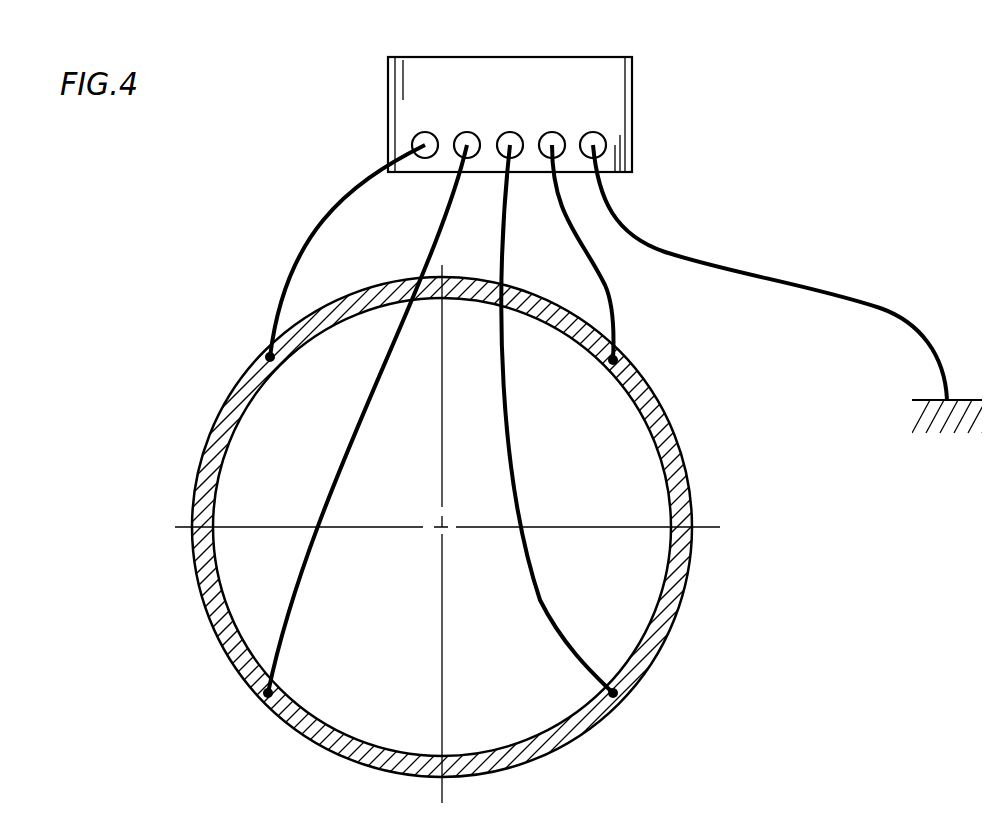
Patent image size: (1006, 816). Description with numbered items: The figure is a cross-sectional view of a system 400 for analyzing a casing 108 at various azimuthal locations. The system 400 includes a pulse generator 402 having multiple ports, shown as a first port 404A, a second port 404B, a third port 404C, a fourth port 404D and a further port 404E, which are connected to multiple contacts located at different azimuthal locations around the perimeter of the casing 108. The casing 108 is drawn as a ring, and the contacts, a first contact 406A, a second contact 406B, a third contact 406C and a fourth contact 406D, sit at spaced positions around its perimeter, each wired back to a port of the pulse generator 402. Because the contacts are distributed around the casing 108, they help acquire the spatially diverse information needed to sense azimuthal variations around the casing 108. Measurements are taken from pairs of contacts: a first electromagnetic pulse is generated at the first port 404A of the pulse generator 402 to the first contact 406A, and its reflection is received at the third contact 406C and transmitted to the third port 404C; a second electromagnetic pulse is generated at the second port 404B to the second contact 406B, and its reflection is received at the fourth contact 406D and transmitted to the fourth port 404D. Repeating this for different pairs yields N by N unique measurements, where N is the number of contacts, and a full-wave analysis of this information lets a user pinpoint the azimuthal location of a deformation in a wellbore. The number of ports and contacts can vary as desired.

The system 400 is at (848, 127).
The pulse generator 402 is at (608, 115).
The first port 404A is at (555, 132).
The second port 404B is at (510, 132).
The third port 404C is at (470, 132).
The fourth port 404D is at (425, 132).
The port 404E is at (607, 145).
The first contact 406A is at (620, 360).
The second contact 406B is at (620, 693).
The third contact 406C is at (282, 705).
The fourth contact 406D is at (265, 357).
The casing 108 is at (711, 527).